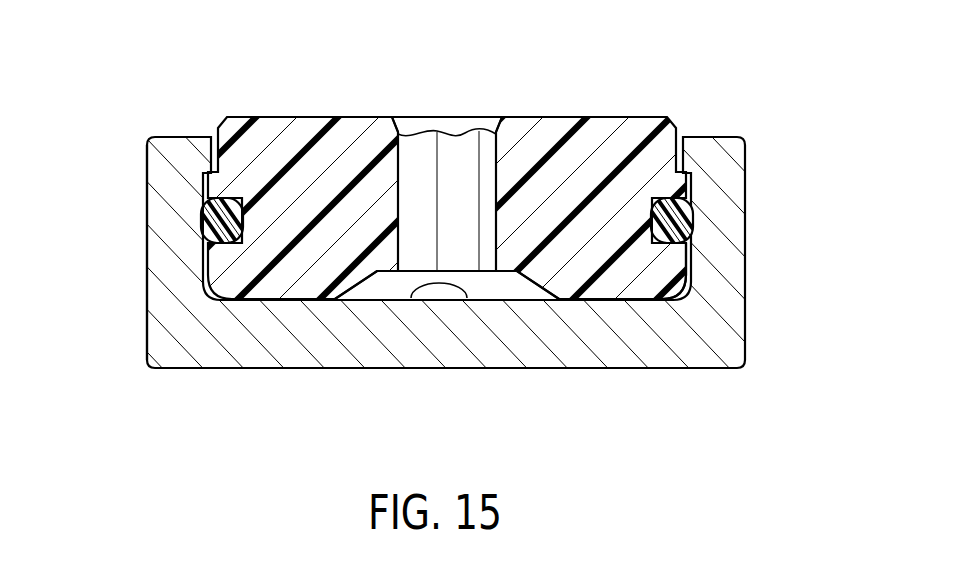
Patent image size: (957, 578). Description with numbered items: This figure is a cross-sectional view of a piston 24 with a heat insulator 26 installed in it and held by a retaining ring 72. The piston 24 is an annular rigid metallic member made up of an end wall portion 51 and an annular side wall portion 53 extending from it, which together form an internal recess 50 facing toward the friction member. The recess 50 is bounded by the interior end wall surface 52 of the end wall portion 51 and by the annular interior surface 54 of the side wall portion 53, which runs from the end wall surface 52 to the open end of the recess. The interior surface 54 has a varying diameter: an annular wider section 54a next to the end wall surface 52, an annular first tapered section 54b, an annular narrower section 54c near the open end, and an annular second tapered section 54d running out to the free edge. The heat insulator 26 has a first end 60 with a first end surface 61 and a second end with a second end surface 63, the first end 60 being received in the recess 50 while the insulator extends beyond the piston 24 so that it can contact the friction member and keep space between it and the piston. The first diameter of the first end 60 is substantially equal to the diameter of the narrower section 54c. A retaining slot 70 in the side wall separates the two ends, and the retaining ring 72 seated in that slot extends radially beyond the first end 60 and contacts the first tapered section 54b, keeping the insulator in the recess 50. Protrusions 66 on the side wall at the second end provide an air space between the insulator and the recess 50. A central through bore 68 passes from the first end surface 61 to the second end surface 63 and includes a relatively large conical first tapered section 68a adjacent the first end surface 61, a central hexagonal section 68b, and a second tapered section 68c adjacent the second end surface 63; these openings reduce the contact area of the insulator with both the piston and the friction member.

The piston 24 is at (756, 158).
The heat insulator 26 is at (646, 108).
The internal recess 50 is at (206, 132).
The end wall portion 51 is at (262, 372).
The interior end wall surface 52 is at (467, 300).
The annular side wall portion 53 is at (143, 301).
The annular interior surface 54 is at (192, 255).
The annular wider section 54a is at (688, 262).
The annular first tapered section 54b is at (690, 199).
The annular narrower section 54c is at (742, 139).
The annular second tapered section 54d is at (680, 168).
The first end 60 is at (690, 268).
The first end surface 61 is at (622, 300).
The second end surface 63 is at (572, 115).
The protrusions 66 is at (210, 168).
The through bore 68 is at (460, 156).
The first tapered section 68a is at (365, 287).
The central hexagonal section 68b is at (400, 201).
The second tapered section 68c is at (418, 117).
The retaining slot 70 is at (243, 198).
The retaining ring 72 is at (195, 222).